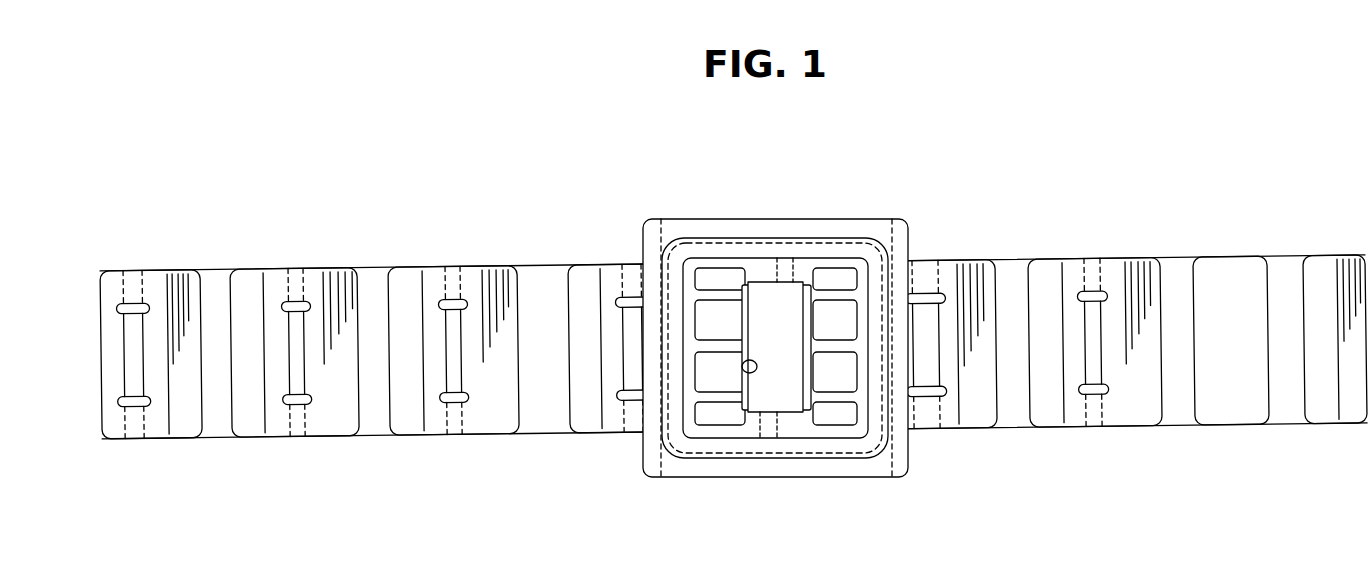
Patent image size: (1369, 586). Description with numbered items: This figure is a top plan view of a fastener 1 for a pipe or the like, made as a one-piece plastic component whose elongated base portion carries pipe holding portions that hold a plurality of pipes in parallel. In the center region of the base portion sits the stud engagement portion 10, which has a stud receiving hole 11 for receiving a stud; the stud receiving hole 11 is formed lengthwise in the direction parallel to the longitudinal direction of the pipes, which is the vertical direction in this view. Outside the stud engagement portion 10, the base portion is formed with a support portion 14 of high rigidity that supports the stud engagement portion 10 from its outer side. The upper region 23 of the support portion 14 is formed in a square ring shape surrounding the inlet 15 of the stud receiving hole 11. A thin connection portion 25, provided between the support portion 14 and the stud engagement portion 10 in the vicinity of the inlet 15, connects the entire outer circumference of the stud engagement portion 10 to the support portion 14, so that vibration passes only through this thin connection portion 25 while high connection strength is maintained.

The fastener 1 is at (882, 202).
The stud engagement portion 10 is at (748, 254).
The stud receiving hole 11 is at (787, 297).
The support portion 14 is at (641, 228).
The inlet 15 is at (742, 368).
The upper region 23 is at (878, 462).
The thin connection portion 25 is at (676, 262).